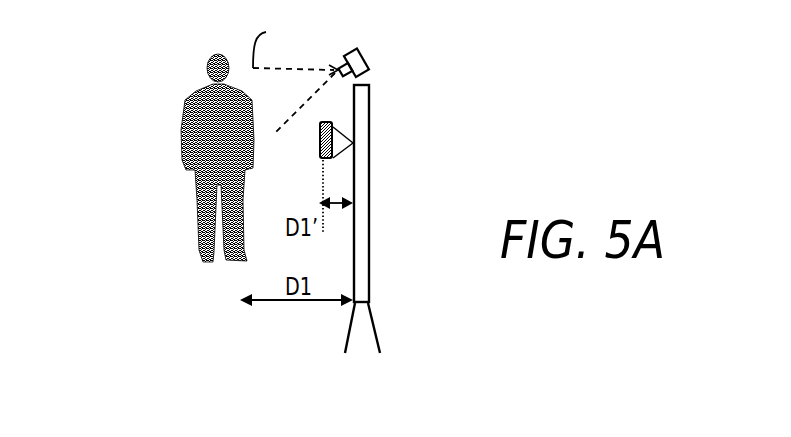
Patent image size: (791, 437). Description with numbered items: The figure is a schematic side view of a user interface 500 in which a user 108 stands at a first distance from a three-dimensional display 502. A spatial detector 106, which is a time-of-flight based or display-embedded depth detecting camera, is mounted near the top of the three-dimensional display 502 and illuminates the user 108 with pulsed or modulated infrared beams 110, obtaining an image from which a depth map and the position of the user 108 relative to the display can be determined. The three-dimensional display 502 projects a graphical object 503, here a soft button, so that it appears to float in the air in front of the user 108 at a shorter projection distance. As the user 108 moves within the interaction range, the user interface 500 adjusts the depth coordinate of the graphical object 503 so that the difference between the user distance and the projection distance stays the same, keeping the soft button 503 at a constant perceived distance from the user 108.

The user 108 is at (147, 139).
The infrared beams 110 is at (307, 103).
The spatial detector 106 is at (362, 52).
The three-dimensional display 502 is at (366, 112).
The graphical object 503 is at (321, 160).
The user interface 500 is at (502, 82).